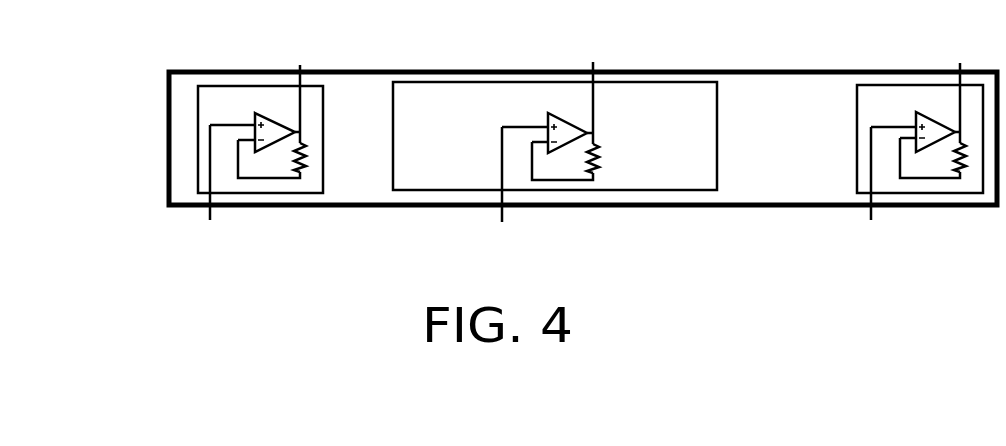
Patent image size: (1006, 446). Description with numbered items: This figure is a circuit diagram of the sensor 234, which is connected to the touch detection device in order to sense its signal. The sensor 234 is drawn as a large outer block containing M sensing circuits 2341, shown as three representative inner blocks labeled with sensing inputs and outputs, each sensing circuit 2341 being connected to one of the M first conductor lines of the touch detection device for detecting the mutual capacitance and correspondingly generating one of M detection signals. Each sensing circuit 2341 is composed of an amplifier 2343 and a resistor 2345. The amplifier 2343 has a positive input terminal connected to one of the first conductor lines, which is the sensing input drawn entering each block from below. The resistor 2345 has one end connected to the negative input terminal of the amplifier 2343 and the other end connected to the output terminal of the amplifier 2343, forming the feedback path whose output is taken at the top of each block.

The sensor 234 is at (167, 146).
The sensing circuit 2341 is at (717, 118).
The amplifier 2343 is at (547, 116).
The resistor 2345 is at (603, 155).